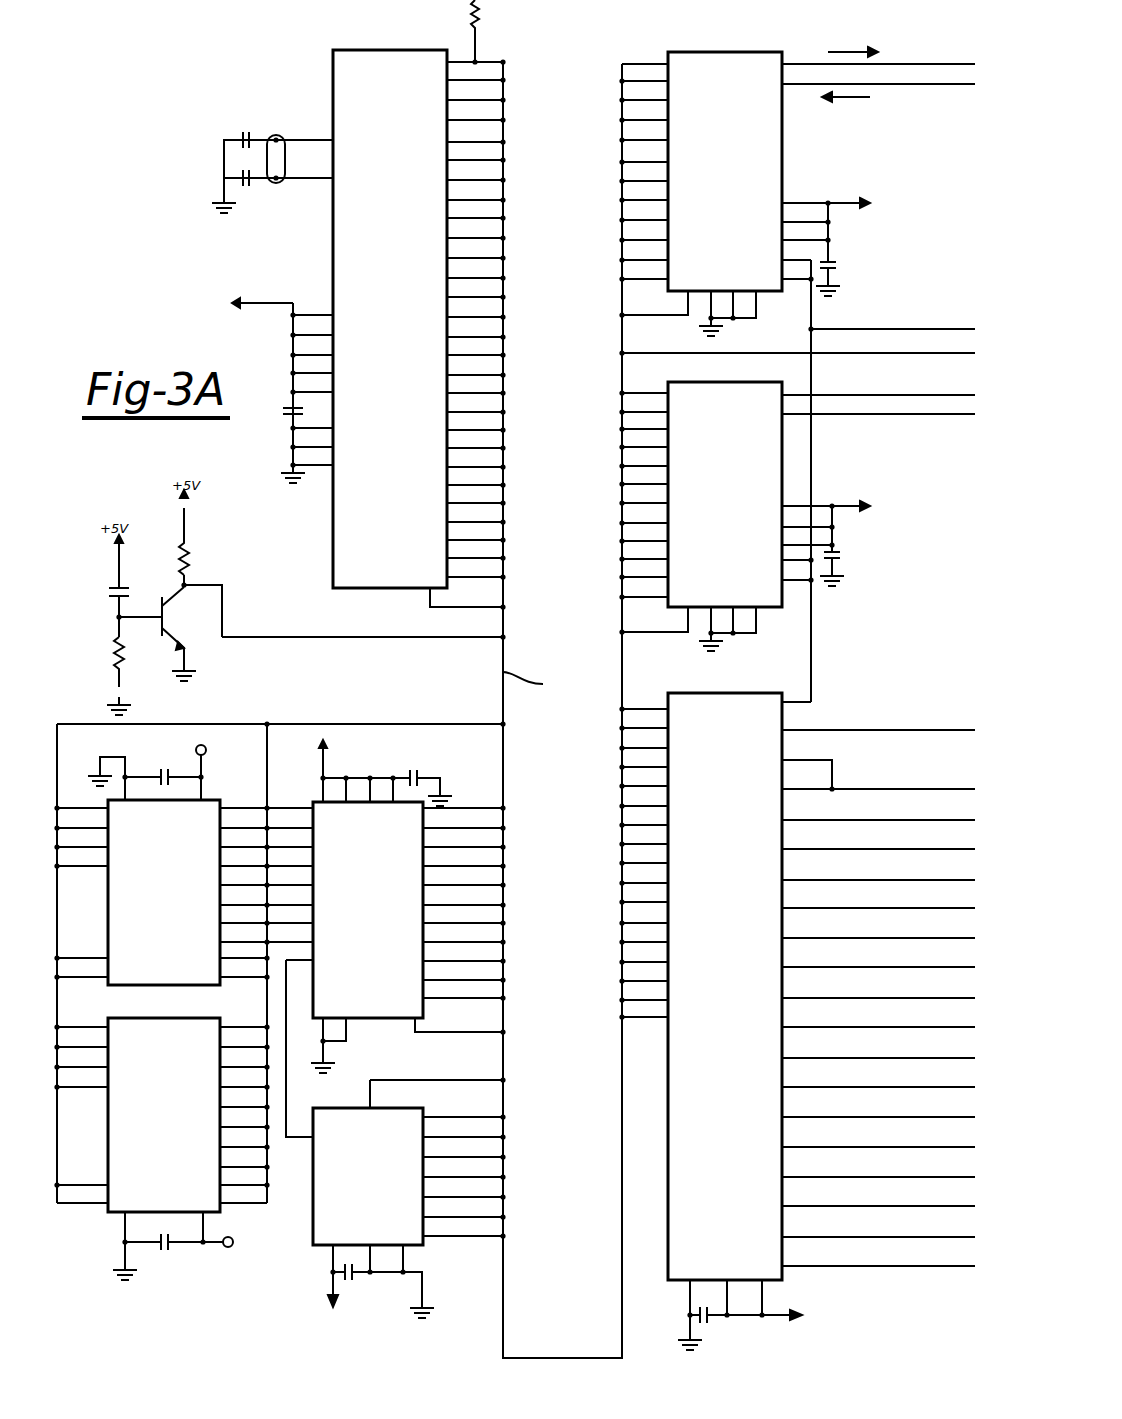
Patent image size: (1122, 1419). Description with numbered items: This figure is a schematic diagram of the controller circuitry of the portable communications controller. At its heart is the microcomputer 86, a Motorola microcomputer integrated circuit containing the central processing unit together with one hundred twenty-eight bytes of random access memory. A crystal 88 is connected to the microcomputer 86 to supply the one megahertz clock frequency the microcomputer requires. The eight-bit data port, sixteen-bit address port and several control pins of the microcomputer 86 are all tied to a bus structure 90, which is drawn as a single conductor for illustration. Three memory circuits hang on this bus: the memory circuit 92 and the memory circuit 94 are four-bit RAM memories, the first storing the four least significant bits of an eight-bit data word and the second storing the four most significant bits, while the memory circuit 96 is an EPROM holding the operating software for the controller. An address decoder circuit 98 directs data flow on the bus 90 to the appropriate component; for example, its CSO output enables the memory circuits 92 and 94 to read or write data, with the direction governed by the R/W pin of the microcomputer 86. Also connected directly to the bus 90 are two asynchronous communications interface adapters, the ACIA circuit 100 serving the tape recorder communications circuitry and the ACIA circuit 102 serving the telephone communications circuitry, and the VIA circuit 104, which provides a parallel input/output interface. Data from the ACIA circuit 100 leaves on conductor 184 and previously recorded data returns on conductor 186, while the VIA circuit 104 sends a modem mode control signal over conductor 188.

The microcomputer 86 is at (390, 544).
The crystal 88 is at (278, 132).
The bus structure 90 is at (339, 710).
The memory circuit 92 is at (174, 956).
The memory circuit 94 is at (174, 1184).
The memory circuit 96 is at (376, 991).
The address decoder circuit 98 is at (376, 1228).
The ACIA circuit 100 is at (729, 254).
The ACIA circuit 102 is at (731, 588).
The VIA circuit 104 is at (728, 1036).
The conductor 184 is at (957, 18).
The conductor 186 is at (902, 87).
The conductor 188 is at (943, 690).